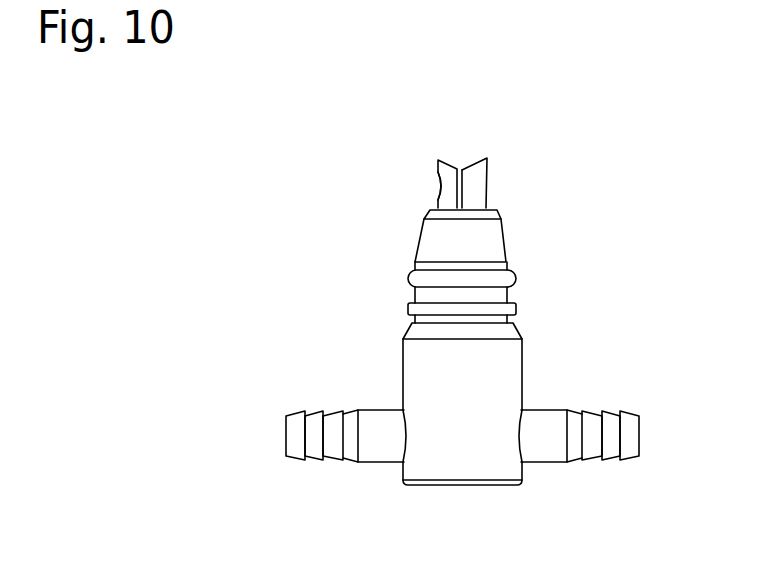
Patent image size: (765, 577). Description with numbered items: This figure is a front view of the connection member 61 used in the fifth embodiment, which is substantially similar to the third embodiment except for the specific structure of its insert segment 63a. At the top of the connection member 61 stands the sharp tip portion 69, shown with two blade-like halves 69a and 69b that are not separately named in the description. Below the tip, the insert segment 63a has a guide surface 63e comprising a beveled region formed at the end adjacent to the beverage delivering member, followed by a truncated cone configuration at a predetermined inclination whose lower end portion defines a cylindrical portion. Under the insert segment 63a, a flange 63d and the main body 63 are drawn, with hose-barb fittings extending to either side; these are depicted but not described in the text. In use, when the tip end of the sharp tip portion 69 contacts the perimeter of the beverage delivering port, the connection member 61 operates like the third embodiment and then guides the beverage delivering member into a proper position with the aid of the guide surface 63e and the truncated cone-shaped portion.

The connection member 61 is at (585, 174).
The joint body 63 is at (522, 352).
The insert segment 63a is at (502, 238).
The flange 63d is at (410, 285).
The guide surface 63e is at (497, 208).
The sharp tip portion 69 is at (473, 165).
The blade portion 69a is at (457, 183).
The groove 69b is at (441, 186).